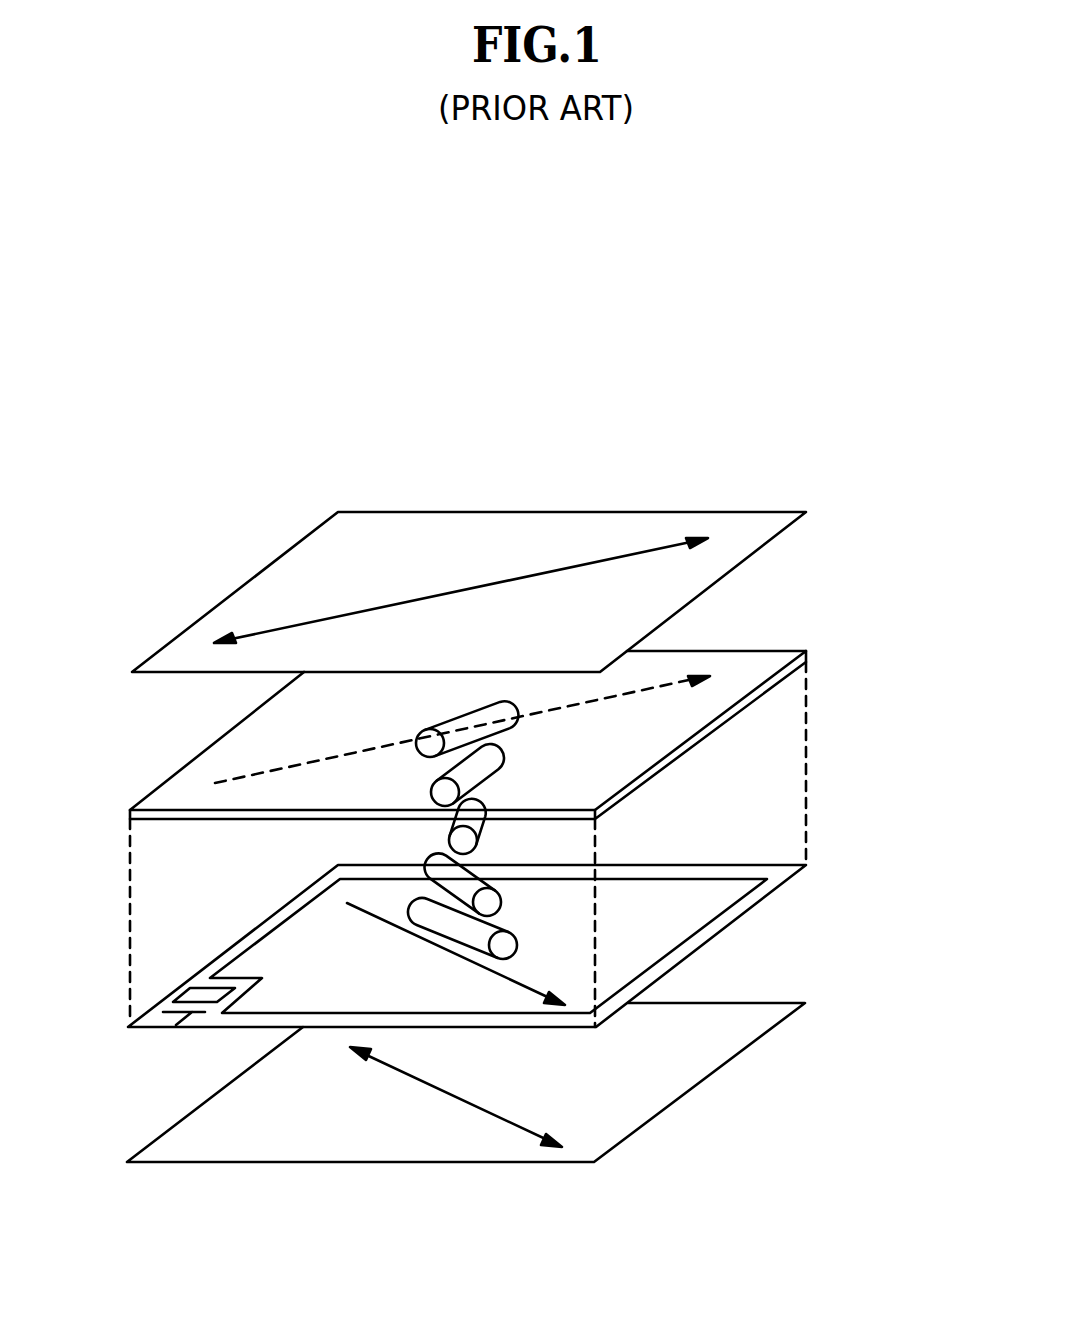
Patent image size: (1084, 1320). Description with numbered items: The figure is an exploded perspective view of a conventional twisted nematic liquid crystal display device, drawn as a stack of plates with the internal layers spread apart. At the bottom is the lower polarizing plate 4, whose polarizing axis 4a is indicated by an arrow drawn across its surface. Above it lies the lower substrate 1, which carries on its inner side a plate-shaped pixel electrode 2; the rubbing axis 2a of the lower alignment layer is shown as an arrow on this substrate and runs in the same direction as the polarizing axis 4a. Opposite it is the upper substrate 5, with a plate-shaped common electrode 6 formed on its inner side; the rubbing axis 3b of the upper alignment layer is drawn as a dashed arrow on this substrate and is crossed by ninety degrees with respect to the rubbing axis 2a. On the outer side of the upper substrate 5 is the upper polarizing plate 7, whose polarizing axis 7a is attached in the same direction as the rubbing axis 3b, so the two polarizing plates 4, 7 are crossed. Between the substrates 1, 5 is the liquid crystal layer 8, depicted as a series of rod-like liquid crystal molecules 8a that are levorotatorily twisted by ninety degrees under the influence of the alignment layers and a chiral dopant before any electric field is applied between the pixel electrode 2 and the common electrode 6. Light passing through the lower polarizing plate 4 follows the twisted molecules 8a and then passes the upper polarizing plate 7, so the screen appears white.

The lower substrate 1 is at (770, 897).
The pixel electrode 2 is at (768, 878).
The rubbing axis of lower alignment layer 2a is at (530, 985).
The rubbing axis of upper alignment layer 3b is at (660, 683).
The lower polarizing plate 4 is at (694, 1080).
The polarizing axis of lower polarizing plate 4a is at (524, 1130).
The upper substrate 5 is at (730, 692).
The common electrode 6 is at (700, 752).
The upper polarizing plate 7 is at (732, 543).
The polarizing axis of upper polarizing plate 7a is at (456, 590).
The liquid crystal layer 8 is at (652, 840).
The liquid crystal molecules 8a is at (440, 793).